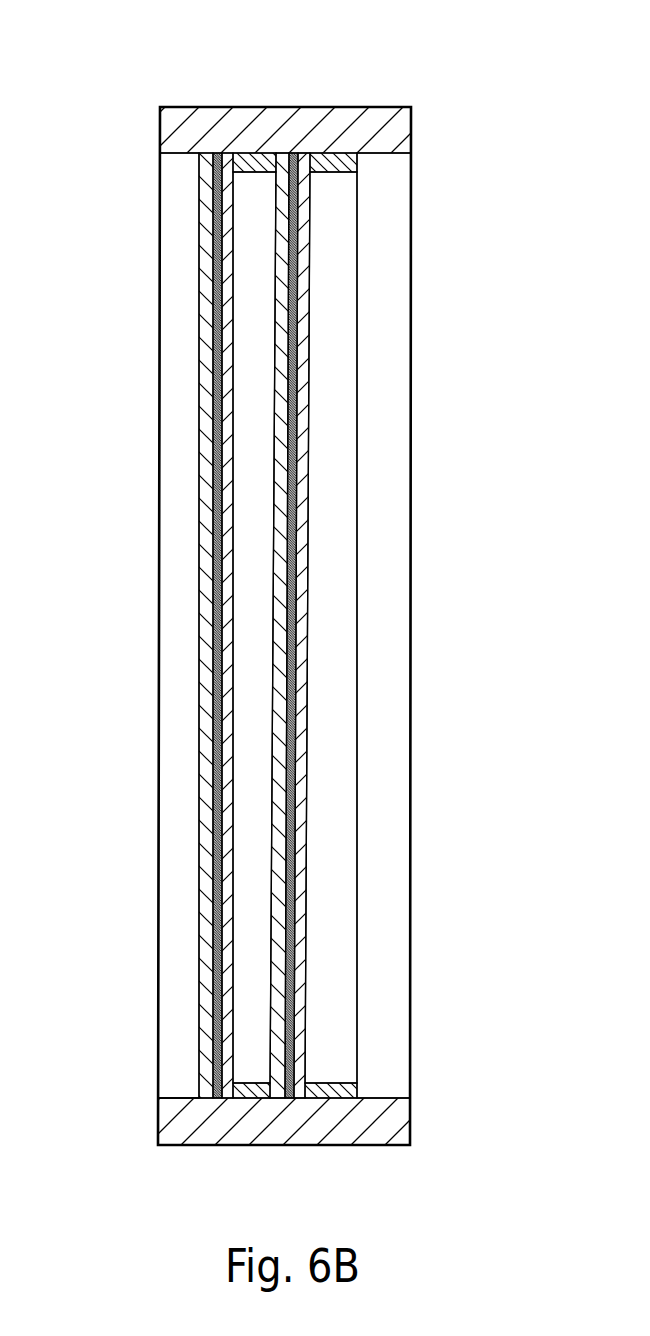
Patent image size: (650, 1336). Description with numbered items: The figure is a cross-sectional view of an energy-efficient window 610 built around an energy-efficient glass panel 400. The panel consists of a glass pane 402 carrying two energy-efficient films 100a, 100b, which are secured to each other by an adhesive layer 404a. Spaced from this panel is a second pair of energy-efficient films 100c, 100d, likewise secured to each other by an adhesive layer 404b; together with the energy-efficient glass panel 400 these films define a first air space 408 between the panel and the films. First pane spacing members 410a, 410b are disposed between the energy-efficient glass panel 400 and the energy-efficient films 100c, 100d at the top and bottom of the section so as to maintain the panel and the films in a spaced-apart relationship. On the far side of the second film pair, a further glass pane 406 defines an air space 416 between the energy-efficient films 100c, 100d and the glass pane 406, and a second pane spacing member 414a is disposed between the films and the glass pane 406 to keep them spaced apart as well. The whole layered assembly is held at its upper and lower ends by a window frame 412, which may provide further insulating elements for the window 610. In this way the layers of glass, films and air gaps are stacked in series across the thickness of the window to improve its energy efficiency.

The window 610 is at (116, 68).
The energy-efficient glass panel 400 is at (160, 261).
The glass pane 402 is at (180, 321).
The glass pane 406 is at (395, 332).
The first air space 408 is at (252, 413).
The window frame 412 is at (411, 128).
The air space 416 is at (333, 238).
The first pane spacing member 410a is at (260, 166).
The first pane spacing member 410b is at (263, 1095).
The second pane spacing member 414a is at (338, 166).
The adhesive layer 404a is at (160, 1112).
The adhesive layer 404b is at (290, 1085).
The energy-efficient film 100a is at (210, 546).
The energy-efficient film 100b is at (215, 608).
The energy-efficient film 100c is at (298, 564).
The energy-efficient film 100d is at (303, 626).